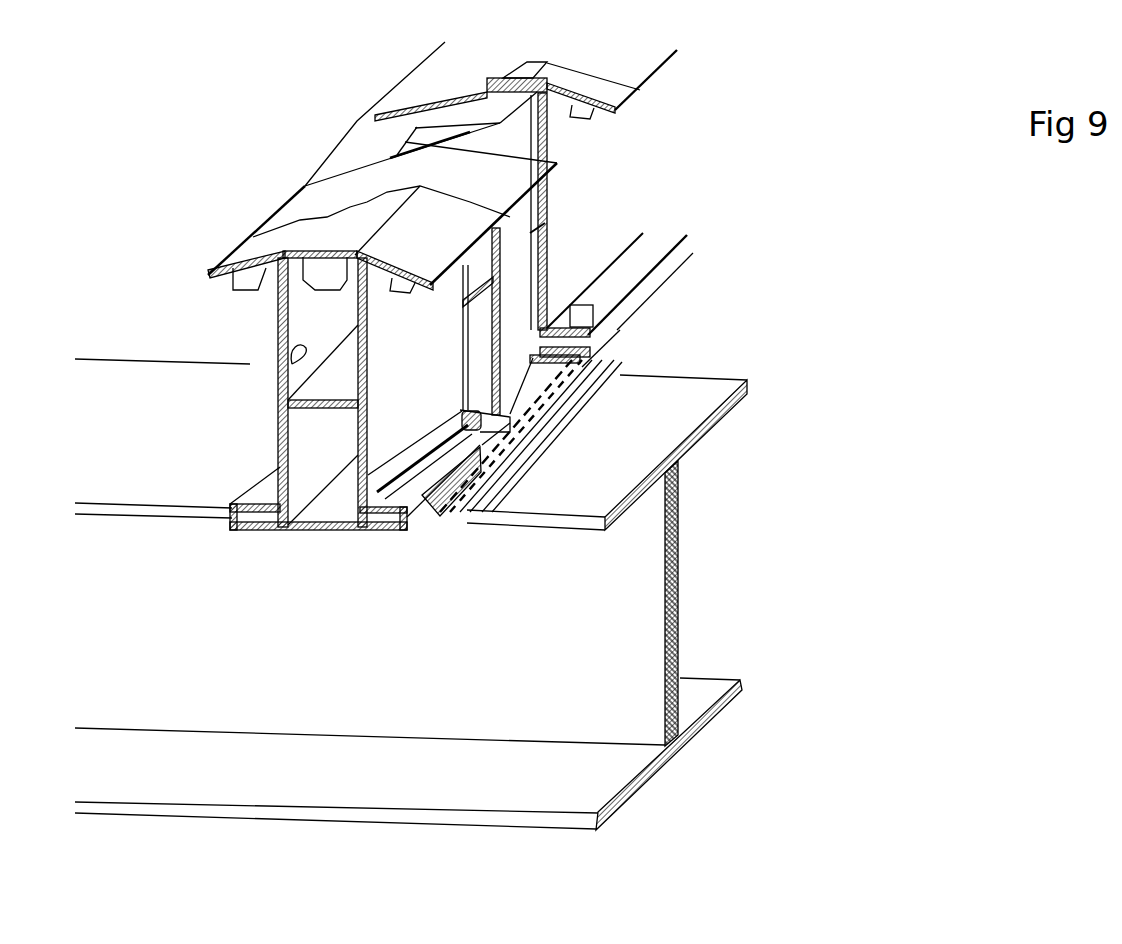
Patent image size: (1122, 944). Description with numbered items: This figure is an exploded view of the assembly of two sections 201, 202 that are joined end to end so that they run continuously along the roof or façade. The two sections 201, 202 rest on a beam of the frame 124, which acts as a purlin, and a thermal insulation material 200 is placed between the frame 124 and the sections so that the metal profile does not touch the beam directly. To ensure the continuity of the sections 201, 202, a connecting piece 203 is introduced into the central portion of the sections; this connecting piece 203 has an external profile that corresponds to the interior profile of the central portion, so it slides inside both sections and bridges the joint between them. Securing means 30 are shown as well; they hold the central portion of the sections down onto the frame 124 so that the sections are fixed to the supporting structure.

The frame 124 is at (603, 630).
The thermal insulation material 200 is at (463, 513).
The section 201 is at (300, 350).
The section 202 is at (600, 178).
The connecting piece 203 is at (395, 100).
The securing means 30 is at (588, 317).